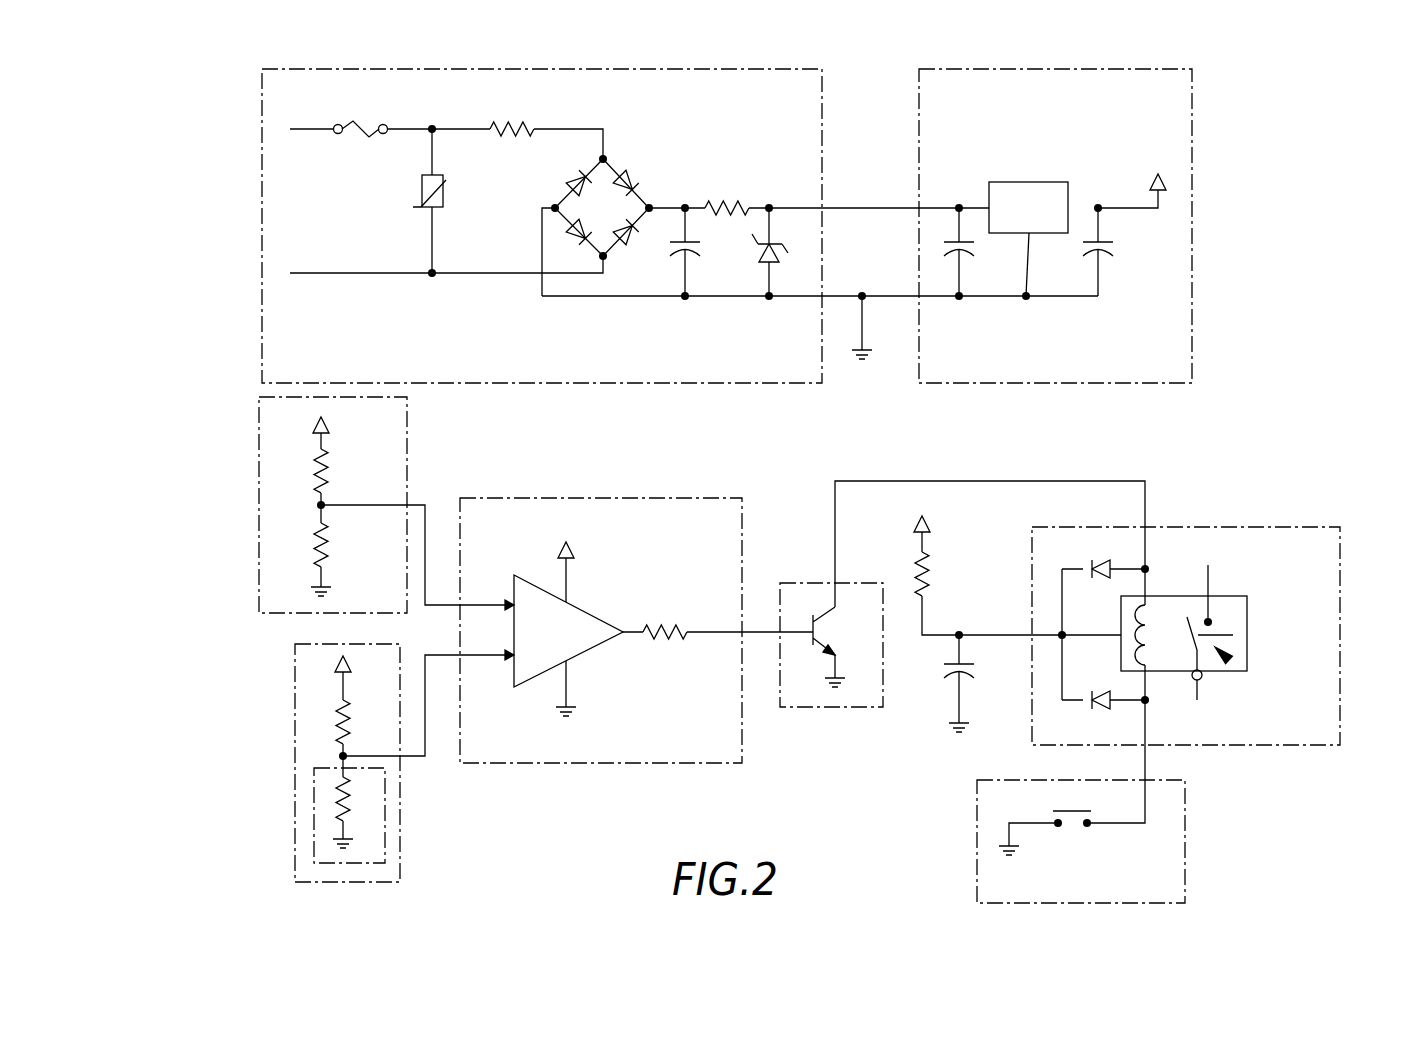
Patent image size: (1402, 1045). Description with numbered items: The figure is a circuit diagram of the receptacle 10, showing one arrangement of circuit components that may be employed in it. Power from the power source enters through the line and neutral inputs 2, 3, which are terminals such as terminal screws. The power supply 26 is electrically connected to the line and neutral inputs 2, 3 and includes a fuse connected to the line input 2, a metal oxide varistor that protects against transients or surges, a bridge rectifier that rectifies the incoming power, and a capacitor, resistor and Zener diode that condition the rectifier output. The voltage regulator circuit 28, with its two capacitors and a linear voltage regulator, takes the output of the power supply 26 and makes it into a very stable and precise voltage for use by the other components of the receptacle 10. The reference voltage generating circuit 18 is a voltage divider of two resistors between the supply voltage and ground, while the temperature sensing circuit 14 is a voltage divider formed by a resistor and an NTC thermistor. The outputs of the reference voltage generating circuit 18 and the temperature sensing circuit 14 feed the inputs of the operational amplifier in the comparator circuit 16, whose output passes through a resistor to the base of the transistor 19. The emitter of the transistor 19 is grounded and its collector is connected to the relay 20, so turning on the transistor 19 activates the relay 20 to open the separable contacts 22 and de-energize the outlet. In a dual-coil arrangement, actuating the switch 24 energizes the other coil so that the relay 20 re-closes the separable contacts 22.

The receptacle 10 is at (224, 98).
The line input 2 is at (290, 129).
The neutral input 3 is at (290, 273).
The power supply 26 is at (262, 241).
The voltage regulator circuit 28 is at (1192, 205).
The reference voltage generating circuit 18 is at (407, 440).
The temperature sensing circuit 14 is at (400, 838).
The comparator circuit 16 is at (681, 763).
The transistor 19 is at (866, 707).
The relay 20 is at (1247, 626).
The separable contacts 22 is at (1229, 660).
The switch 24 is at (1185, 818).